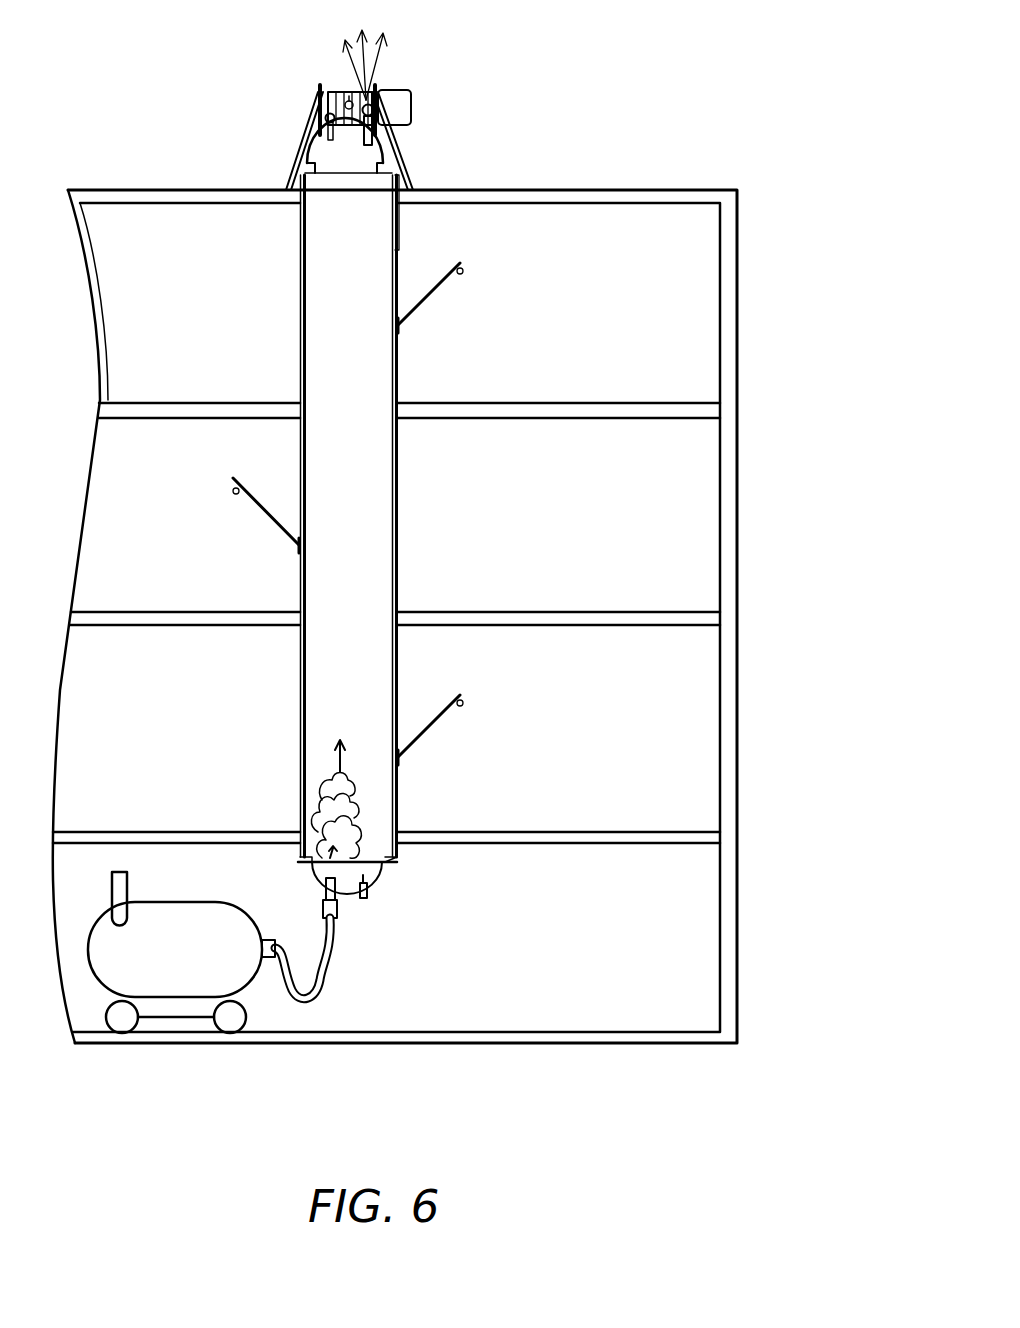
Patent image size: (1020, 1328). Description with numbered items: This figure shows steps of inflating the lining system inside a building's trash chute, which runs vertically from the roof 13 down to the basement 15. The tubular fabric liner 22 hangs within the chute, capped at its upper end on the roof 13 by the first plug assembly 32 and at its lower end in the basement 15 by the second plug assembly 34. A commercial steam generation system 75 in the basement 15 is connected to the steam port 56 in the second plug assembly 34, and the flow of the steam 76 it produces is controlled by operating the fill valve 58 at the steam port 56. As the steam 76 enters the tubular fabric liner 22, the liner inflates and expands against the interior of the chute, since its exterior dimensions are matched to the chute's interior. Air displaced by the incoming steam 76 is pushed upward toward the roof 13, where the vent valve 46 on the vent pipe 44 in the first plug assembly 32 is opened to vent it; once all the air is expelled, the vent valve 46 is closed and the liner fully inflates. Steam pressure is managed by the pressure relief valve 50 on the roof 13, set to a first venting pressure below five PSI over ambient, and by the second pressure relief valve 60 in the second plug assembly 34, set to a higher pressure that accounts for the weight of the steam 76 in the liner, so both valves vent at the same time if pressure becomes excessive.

The roof 13 is at (660, 190).
The basement 15 is at (660, 923).
The tubular fabric liner 22 is at (305, 696).
The first plug assembly 32 is at (333, 152).
The second plug assembly 34 is at (366, 872).
The vent pipe 44 is at (373, 138).
The vent valve 46 is at (372, 108).
The pressure relief valve 50 is at (326, 116).
The steam port 56 is at (326, 888).
The fill valve 58 is at (336, 917).
The second pressure relief valve 60 is at (368, 893).
The steam generation system 75 is at (192, 912).
The steam 76 is at (328, 785).